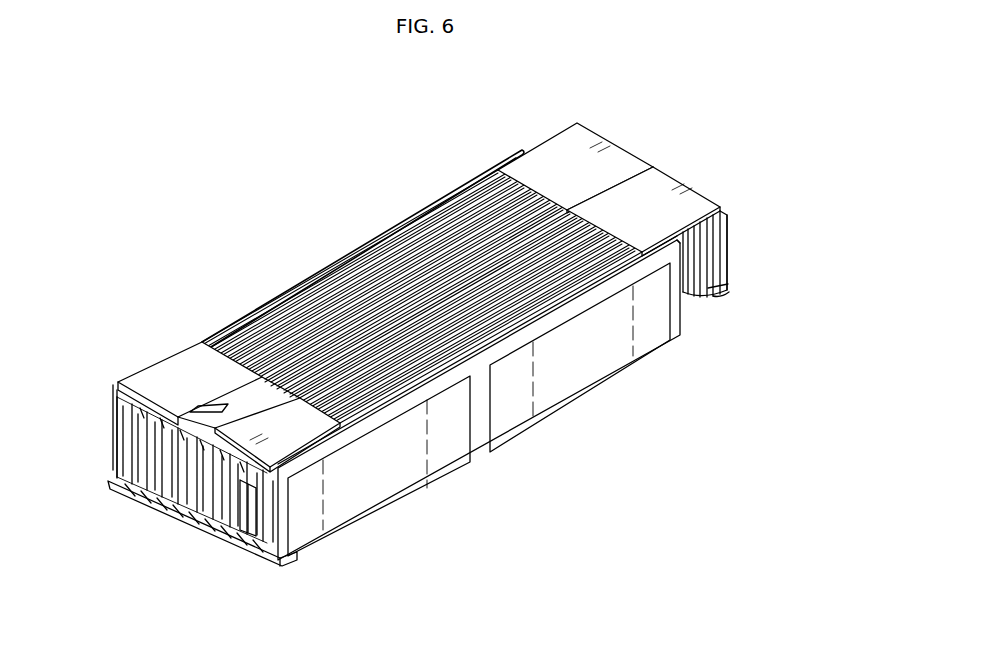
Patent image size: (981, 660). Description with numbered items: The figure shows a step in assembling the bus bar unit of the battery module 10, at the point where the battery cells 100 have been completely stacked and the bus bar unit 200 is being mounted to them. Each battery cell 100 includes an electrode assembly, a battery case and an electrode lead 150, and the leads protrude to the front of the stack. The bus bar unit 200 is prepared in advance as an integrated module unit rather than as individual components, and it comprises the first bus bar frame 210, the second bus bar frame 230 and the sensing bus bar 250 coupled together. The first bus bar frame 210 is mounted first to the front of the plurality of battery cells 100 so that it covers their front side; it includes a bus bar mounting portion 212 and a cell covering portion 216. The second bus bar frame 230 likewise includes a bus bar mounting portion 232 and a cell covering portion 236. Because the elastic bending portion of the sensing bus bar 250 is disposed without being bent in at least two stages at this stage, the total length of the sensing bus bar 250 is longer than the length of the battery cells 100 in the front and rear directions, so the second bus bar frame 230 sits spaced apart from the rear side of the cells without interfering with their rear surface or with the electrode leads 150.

The battery module 10 is at (262, 184).
The battery cell 100 is at (500, 452).
The electrode lead 150 is at (257, 520).
The bus bar unit 200 is at (683, 136).
The first bus bar frame 210 is at (120, 374).
The bus bar mounting portion 212 is at (250, 565).
The cell covering portion 216 is at (300, 435).
The second bus bar frame 230 is at (562, 122).
The bus bar mounting portion 232 is at (719, 292).
The cell covering portion 236 is at (698, 203).
The sensing bus bar 250 is at (385, 304).